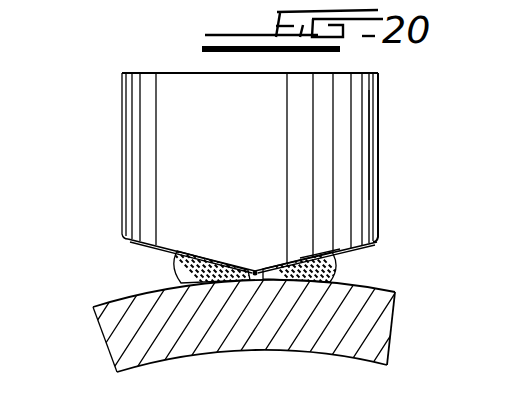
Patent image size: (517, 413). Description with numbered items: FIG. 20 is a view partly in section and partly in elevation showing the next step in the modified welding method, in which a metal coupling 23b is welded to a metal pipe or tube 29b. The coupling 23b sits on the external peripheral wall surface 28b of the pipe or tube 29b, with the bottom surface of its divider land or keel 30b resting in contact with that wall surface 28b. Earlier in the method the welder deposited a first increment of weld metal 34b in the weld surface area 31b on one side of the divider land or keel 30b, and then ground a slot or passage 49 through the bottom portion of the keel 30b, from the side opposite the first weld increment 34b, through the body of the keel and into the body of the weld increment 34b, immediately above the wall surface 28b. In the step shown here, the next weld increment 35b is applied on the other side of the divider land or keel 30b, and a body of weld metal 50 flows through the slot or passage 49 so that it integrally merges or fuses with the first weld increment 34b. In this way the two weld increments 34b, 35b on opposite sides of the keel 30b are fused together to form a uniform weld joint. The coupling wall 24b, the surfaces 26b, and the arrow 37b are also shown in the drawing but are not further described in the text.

The metal coupling 23b is at (380, 153).
The wall of fitting 24b is at (343, 125).
The sealing face 26b is at (136, 243).
The weld increment 35b is at (300, 256).
The weld increment 34b is at (212, 253).
The slot or passage 49 is at (250, 271).
The body of weld metal 50 is at (257, 273).
The divider land or keel 30b is at (252, 274).
The external peripheral wall surface 28b is at (392, 291).
The metal pipe or tube 29b is at (377, 325).
The weld surface area 31b is at (148, 266).
The direction of force 37b is at (362, 270).